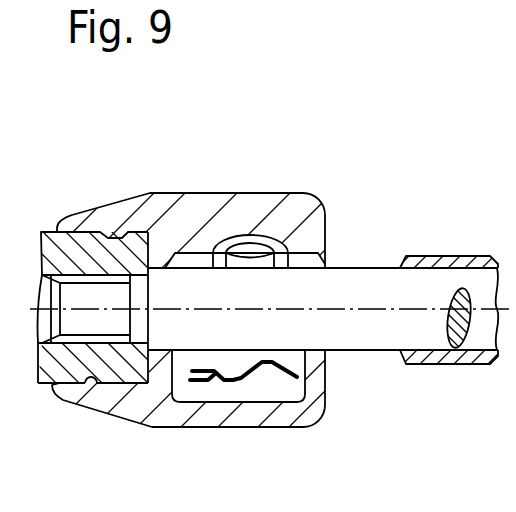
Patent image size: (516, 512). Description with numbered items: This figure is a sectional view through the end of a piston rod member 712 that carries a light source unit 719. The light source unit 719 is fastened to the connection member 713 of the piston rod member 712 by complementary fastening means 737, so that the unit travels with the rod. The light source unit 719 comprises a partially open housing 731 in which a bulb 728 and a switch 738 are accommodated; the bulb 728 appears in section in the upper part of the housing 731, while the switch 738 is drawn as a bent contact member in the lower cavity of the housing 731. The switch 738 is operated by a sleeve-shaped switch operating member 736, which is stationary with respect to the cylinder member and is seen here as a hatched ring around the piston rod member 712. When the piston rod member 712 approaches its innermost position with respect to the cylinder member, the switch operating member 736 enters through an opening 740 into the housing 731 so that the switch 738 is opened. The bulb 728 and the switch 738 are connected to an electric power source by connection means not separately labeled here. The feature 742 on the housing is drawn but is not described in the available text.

The light source unit 719 is at (217, 203).
The lip of housing 742 is at (142, 236).
The opening 740 is at (327, 268).
The bulb 728 is at (251, 260).
The housing 731 is at (257, 413).
The switch 738 is at (268, 365).
The connection member 713 is at (130, 368).
The fastening means 737 is at (86, 384).
The piston rod member 712 is at (415, 283).
The switch operating member 736 is at (473, 257).